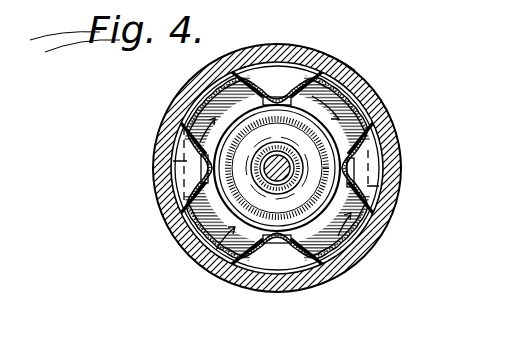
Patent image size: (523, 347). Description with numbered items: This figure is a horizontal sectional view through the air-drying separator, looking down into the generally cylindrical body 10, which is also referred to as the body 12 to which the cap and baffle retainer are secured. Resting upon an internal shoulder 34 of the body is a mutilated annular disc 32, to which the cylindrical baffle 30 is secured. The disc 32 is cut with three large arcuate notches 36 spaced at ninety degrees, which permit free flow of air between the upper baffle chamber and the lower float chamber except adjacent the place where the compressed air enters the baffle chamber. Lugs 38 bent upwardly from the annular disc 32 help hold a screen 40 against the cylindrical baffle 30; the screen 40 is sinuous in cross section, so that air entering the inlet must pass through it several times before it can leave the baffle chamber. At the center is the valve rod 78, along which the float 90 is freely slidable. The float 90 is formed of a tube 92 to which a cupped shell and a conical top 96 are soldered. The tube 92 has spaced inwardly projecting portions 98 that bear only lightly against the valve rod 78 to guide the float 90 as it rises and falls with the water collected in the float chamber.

The body 10 is at (144, 183).
The body 12 is at (182, 100).
The cylindrical baffle 30 is at (278, 99).
The mutilated annular disc 32 is at (156, 167).
The internal shoulder 34 is at (397, 147).
The arcuate notches 36 is at (263, 51).
The lugs 38 is at (294, 83).
The screen 40 is at (337, 66).
The valve rod 78 is at (291, 165).
The float 90 is at (356, 188).
The tube 92 is at (286, 159).
The conical top 96 is at (363, 198).
The inwardly projecting portions 98 is at (279, 150).